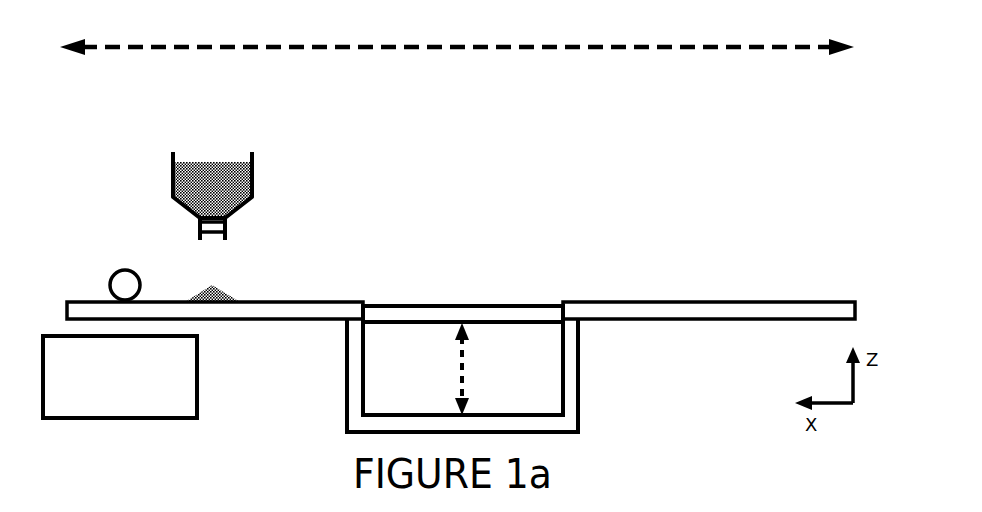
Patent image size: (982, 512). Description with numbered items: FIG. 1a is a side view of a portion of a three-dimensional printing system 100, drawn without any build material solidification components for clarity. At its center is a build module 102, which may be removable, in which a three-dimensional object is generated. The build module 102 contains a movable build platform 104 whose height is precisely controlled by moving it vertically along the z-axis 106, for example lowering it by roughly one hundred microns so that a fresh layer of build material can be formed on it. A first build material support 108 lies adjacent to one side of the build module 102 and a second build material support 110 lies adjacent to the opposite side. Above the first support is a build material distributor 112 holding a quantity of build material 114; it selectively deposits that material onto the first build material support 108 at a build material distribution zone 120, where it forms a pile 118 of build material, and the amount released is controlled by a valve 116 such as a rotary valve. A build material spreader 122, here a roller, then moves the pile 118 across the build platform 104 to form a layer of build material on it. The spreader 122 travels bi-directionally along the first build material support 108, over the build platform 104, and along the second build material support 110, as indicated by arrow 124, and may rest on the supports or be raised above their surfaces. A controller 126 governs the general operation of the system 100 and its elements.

The 3D printing system 100 is at (108, 91).
The build module 102 is at (348, 417).
The build platform 104 is at (373, 314).
The z-axis 106 is at (465, 373).
The first build material support 108 is at (85, 301).
The second build material support 110 is at (840, 300).
The build material distributor 112 is at (256, 182).
The build material 114 is at (221, 163).
The valve 116 is at (202, 228).
The pile of build material 118 is at (212, 288).
The build material distribution zone 120 is at (220, 282).
The build material spreader 122 is at (128, 271).
The arrow 124 is at (727, 48).
The controller 126 is at (200, 402).